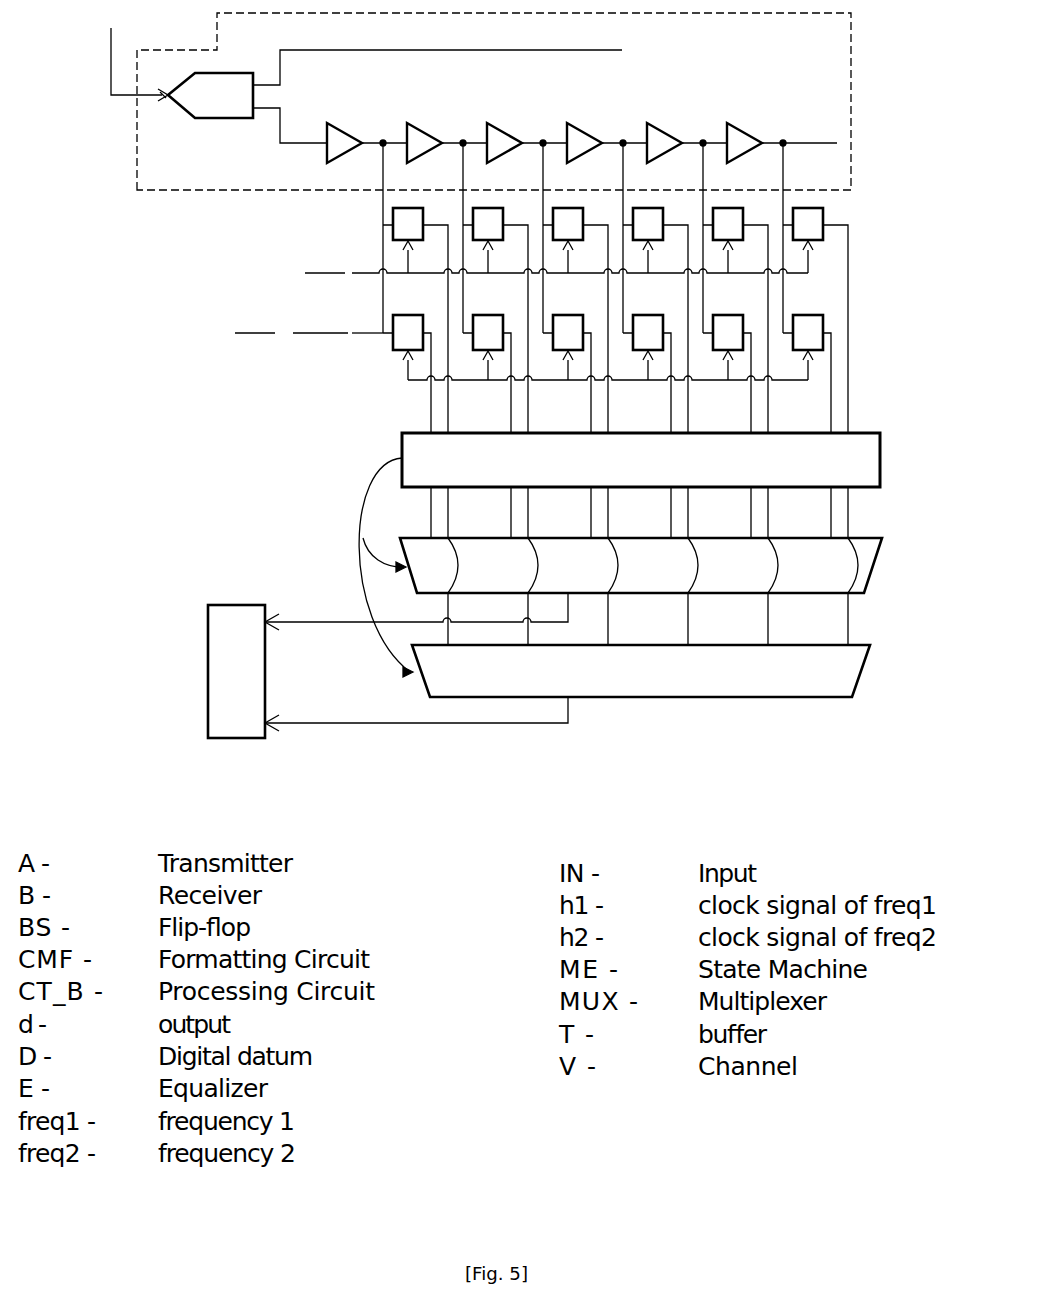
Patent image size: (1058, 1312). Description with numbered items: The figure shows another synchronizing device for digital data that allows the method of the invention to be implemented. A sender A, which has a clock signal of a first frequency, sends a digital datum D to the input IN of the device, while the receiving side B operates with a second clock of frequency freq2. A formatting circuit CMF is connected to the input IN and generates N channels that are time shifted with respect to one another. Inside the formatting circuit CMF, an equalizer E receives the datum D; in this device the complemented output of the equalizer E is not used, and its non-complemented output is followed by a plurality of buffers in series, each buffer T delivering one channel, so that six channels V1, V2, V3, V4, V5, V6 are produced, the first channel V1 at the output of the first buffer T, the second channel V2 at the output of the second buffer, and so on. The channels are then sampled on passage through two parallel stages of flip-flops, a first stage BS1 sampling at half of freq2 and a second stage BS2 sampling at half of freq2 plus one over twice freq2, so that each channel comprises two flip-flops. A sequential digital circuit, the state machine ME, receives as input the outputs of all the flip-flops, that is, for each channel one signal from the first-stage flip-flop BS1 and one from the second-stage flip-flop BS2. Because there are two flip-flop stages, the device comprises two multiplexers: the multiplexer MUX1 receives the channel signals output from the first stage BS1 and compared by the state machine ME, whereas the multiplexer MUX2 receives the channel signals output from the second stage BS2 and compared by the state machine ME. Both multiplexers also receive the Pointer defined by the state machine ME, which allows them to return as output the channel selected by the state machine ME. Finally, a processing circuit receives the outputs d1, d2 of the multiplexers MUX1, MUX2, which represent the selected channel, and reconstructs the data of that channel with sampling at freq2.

The sender A is at (139, 54).
The receiver B is at (194, 136).
The first stage of flip-flops BS1 is at (620, 318).
The second stage of flip-flops BS2 is at (620, 364).
The formatting circuit CMF is at (175, 192).
The output of first multiplexer d1 is at (416, 611).
The output of second multiplexer d2 is at (416, 714).
The digital datum D is at (357, 96).
The equalizer E is at (210, 95).
The frequency freq2 is at (521, 316).
The input IN is at (140, 108).
The state machine ME is at (641, 485).
The first multiplexer MUX1 is at (641, 591).
The second multiplexer MUX2 is at (641, 671).
The pointer Pointer is at (340, 567).
The buffer T is at (548, 139).
The first channel V1 is at (383, 236).
The second channel V2 is at (463, 236).
The third channel V3 is at (543, 236).
The fourth channel V4 is at (623, 236).
The fifth channel V5 is at (703, 236).
The sixth channel V6 is at (798, 236).